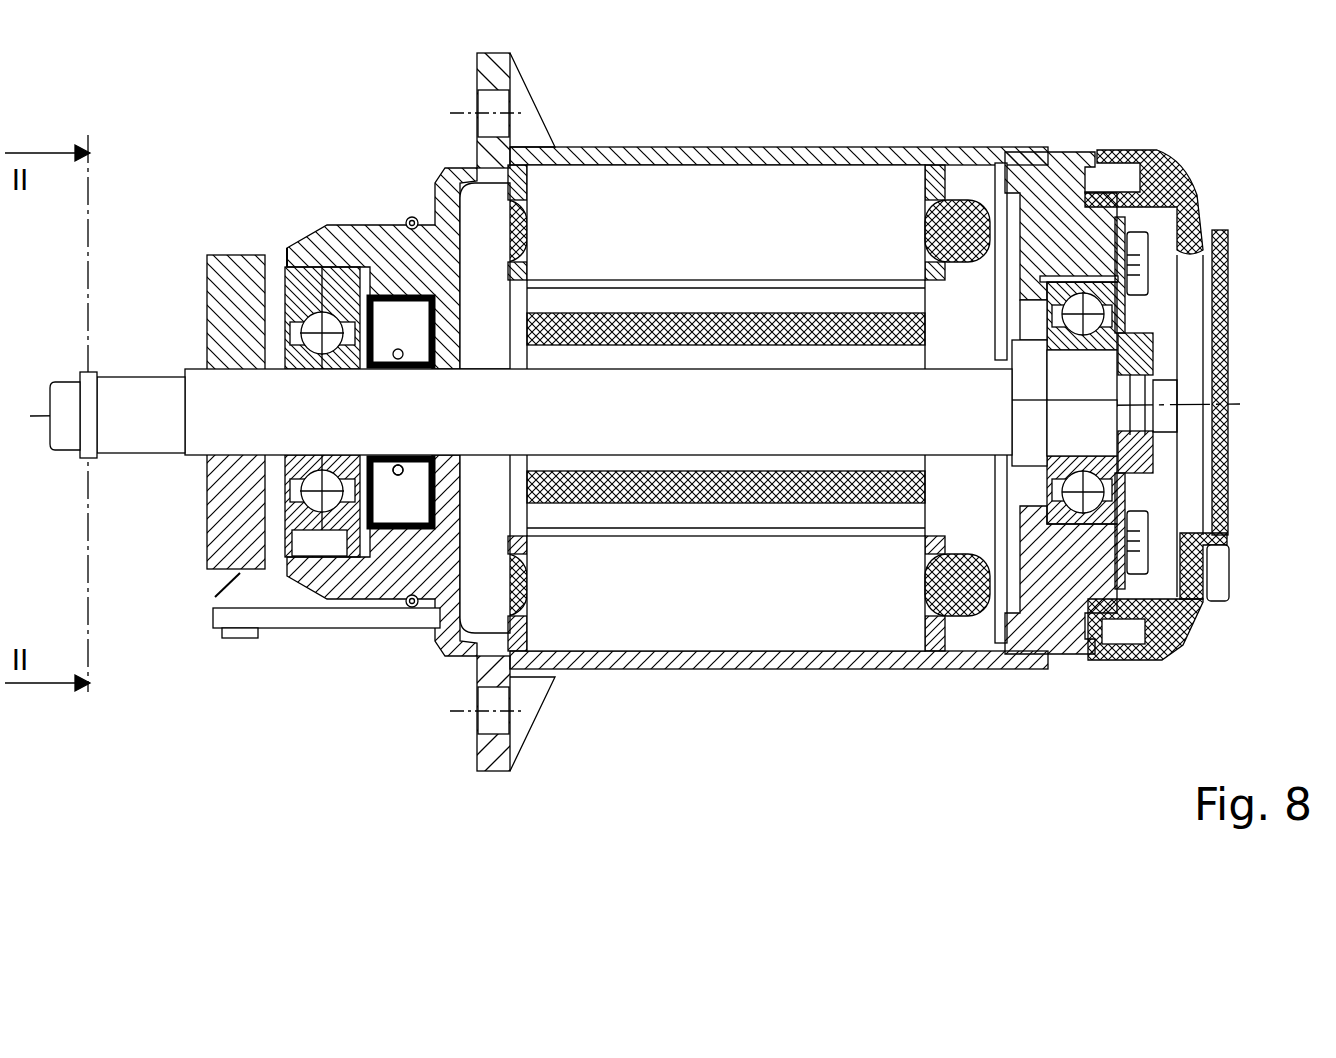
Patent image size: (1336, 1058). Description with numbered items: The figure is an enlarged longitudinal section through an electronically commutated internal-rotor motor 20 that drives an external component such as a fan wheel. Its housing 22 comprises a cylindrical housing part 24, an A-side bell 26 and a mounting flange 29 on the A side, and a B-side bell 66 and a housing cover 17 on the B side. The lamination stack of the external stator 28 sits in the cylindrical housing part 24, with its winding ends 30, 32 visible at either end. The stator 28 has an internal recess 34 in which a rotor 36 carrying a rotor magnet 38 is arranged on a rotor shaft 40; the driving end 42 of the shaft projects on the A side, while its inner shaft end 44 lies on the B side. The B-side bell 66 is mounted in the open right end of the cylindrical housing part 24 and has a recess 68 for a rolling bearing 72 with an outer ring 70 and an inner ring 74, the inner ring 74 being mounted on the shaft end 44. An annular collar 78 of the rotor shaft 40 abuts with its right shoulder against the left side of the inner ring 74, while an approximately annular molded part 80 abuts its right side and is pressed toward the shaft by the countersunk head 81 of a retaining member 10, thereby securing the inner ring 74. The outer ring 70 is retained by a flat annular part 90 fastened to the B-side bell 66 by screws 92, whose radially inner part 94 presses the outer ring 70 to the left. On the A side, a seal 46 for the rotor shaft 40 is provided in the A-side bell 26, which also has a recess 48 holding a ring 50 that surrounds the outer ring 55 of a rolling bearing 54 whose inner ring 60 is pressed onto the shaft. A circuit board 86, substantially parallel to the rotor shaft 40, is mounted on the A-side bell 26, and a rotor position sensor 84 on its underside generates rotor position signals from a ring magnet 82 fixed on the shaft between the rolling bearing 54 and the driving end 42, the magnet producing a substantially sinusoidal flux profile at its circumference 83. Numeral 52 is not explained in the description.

The retaining member 10 is at (1230, 424).
The housing cover 17 is at (1228, 518).
The internal-rotor motor 20 is at (763, 107).
The housing 22 is at (412, 200).
The cylindrical housing part 24 is at (622, 147).
The A-side bell 26 is at (430, 578).
The external stator 28 is at (648, 245).
The mounting flange 29 is at (520, 762).
The winding end 30 is at (485, 408).
The winding end 32 is at (945, 200).
The internal recess 34 is at (558, 292).
The rotor 36 is at (715, 358).
The rotor magnet 38 is at (795, 313).
The rotor shaft 40 is at (593, 452).
The driving end 42 is at (160, 395).
The inner shaft end 44 is at (1058, 433).
The seal 46 is at (398, 300).
The recess 48 is at (276, 318).
The ring 50 is at (320, 262).
The bearing seat 52 is at (288, 250).
The rolling bearing 54 is at (212, 292).
The outer ring 55 is at (290, 512).
The inner ring 60 is at (340, 458).
The B-side bell 66 is at (1075, 150).
The recess 68 is at (1125, 300).
The outer ring 70 is at (1062, 150).
The rolling bearing 72 is at (1008, 300).
The inner ring 74 is at (1045, 320).
The annular collar 78 is at (1047, 497).
The molded part 80 is at (1152, 342).
The countersunk head 81 is at (1150, 378).
The ring magnet 82 is at (225, 497).
The circumference 83 is at (226, 598).
The rotor position sensor 84 is at (236, 638).
The circuit board 86 is at (358, 622).
The flat annular part 90 is at (1185, 172).
The screws 92 is at (1216, 233).
The radially inner part 94 is at (1110, 495).